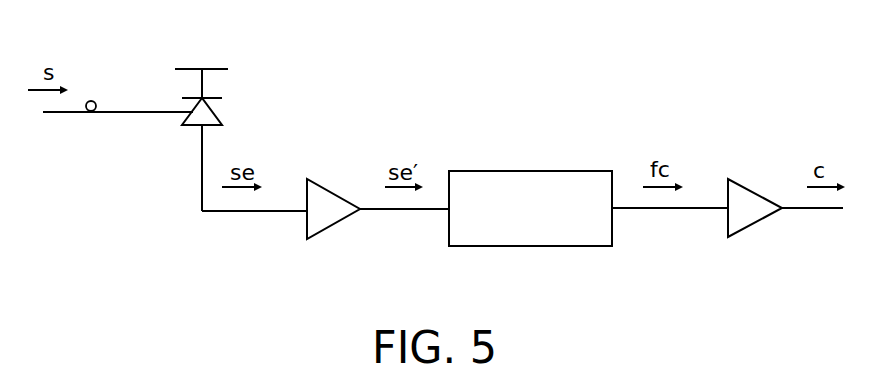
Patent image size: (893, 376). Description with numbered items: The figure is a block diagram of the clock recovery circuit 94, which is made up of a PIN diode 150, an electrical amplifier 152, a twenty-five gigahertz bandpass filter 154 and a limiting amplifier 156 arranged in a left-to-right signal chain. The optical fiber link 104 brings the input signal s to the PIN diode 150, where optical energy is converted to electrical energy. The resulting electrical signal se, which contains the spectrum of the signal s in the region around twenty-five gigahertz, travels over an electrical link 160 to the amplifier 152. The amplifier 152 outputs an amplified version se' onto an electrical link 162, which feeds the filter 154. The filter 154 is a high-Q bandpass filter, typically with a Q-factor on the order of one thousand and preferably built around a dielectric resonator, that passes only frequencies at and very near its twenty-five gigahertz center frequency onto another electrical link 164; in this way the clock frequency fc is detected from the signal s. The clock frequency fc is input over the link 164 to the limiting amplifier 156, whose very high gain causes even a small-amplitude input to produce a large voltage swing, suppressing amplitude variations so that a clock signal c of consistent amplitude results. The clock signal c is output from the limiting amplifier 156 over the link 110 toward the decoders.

The clock recovery circuit 94 is at (411, 58).
The optical fiber link 104 is at (133, 113).
The PIN diode 150 is at (216, 113).
The electrical amplifier 152 is at (320, 180).
The bandpass filter 154 is at (488, 170).
The limiting amplifier 156 is at (738, 180).
The electrical link 160 is at (243, 212).
The electrical link 162 is at (388, 210).
The electrical link 164 is at (673, 209).
The link 110 is at (803, 209).